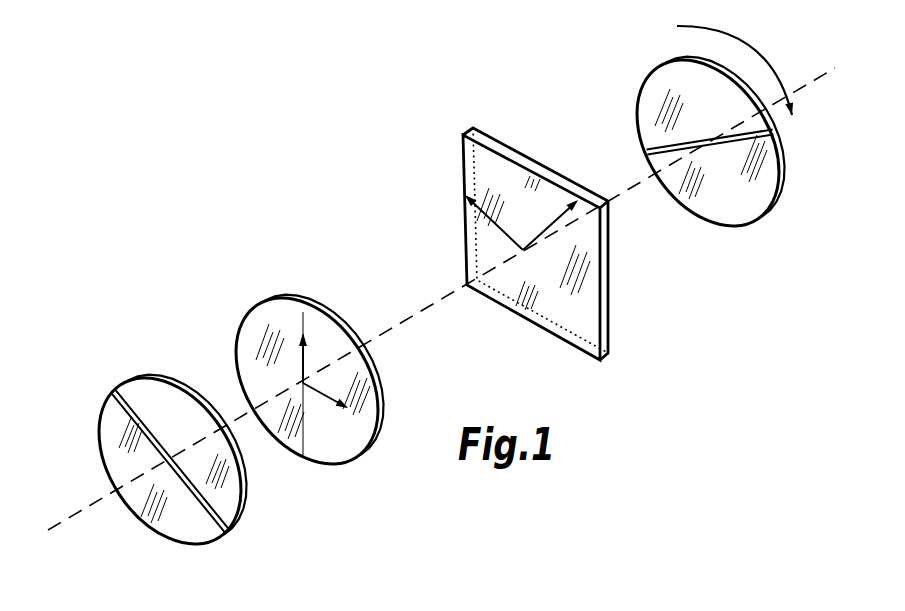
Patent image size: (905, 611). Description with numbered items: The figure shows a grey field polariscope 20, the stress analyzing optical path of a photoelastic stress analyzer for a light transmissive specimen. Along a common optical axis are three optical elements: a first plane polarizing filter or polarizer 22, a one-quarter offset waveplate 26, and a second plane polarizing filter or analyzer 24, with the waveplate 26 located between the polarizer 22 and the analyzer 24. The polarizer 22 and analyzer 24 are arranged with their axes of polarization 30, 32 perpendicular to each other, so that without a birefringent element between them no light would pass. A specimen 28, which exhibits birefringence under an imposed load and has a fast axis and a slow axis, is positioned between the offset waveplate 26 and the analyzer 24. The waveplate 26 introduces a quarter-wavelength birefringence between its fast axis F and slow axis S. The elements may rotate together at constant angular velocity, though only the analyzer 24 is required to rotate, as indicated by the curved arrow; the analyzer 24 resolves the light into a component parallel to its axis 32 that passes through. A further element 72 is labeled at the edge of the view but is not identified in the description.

The grey field polariscope 20 is at (263, 268).
The polarizer 22 is at (166, 461).
The analyzer 24 is at (710, 136).
The one-quarter offset waveplate 26 is at (380, 416).
The specimen 28 is at (612, 312).
The axis of polarization of the polarizer 30 is at (187, 493).
The axis of polarization of the analyzer 32 is at (732, 143).
The camera / detector 72 is at (848, 610).